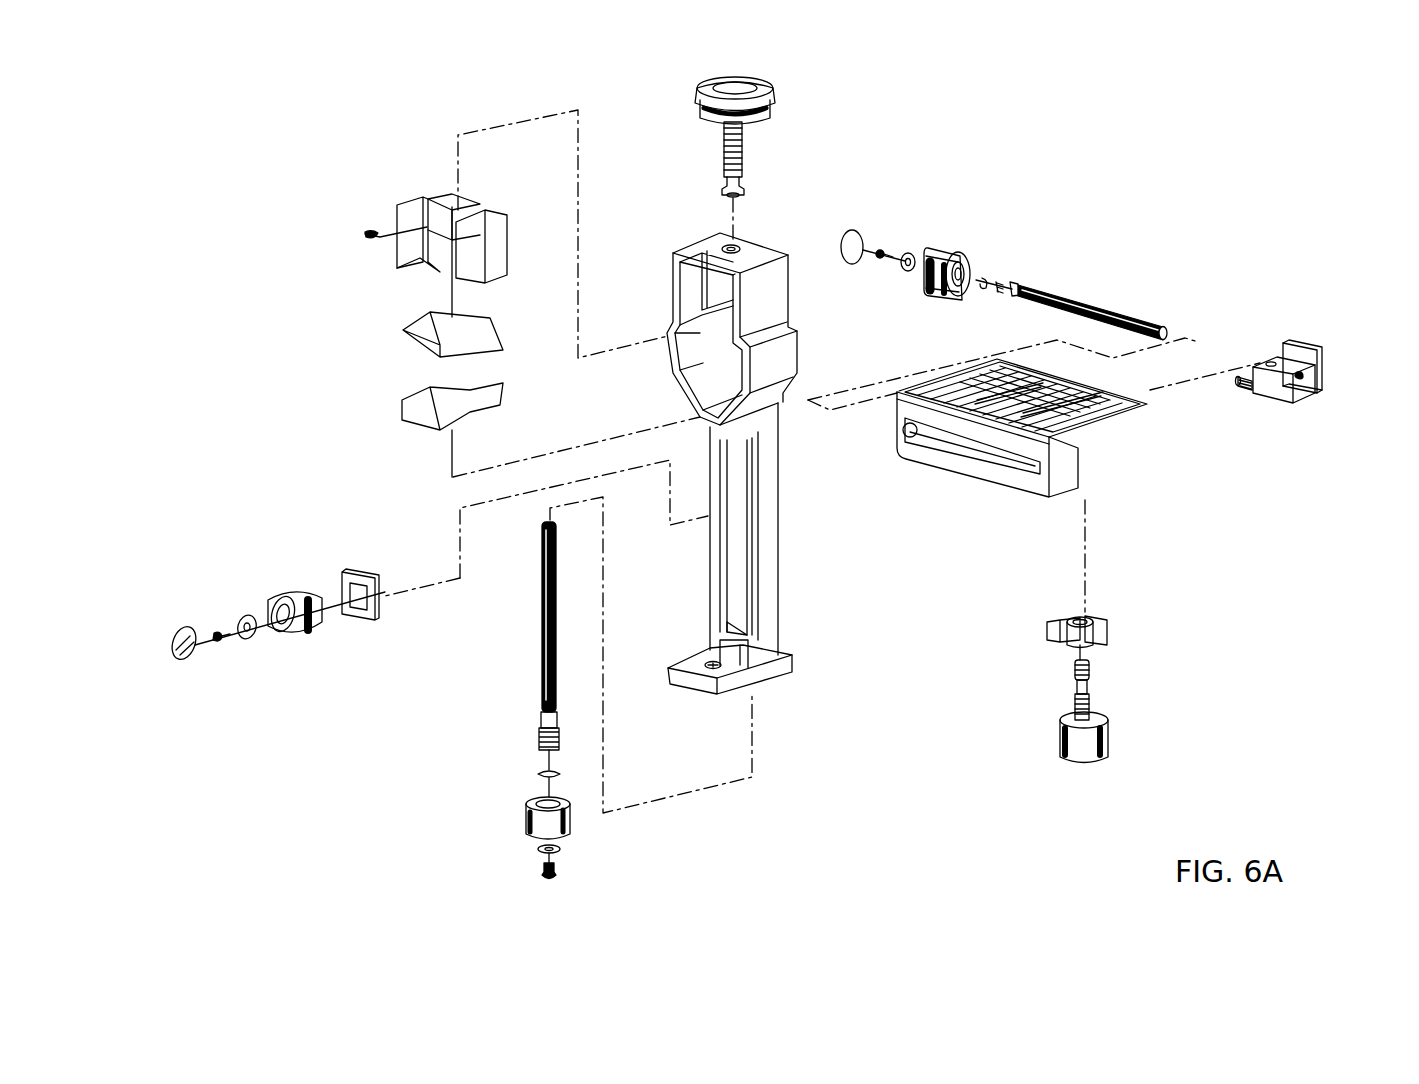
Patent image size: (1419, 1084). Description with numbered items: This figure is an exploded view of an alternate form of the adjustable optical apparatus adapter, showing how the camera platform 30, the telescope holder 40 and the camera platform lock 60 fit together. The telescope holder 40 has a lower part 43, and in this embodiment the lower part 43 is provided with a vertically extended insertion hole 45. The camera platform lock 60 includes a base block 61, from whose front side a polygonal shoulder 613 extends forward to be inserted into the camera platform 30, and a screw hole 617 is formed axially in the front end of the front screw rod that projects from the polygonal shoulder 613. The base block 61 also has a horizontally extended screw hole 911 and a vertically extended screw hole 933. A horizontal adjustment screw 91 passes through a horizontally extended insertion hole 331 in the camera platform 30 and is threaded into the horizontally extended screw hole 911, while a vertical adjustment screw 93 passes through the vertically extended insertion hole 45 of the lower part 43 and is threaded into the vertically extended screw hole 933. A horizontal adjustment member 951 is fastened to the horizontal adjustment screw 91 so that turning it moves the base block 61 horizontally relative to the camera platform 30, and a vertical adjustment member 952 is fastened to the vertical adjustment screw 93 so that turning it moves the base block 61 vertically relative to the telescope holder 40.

The camera platform 30 is at (998, 500).
The horizontally extended insertion hole 331 is at (900, 410).
The telescope holder 40 is at (777, 228).
The lower part 43 is at (778, 560).
The vertically extended insertion hole 45 is at (758, 625).
The camera platform lock 60 is at (146, 626).
The base block 61 is at (1320, 373).
The polygonal shoulder 613 is at (1283, 387).
The screw hole 617 is at (1242, 385).
The horizontal adjustment screw 91 is at (1092, 302).
The horizontally extended screw hole 911 is at (1322, 392).
The vertical adjustment screw 93 is at (542, 630).
The vertically extended screw hole 933 is at (1272, 361).
The horizontal adjustment member 951 is at (940, 240).
The vertical adjustment member 952 is at (524, 827).